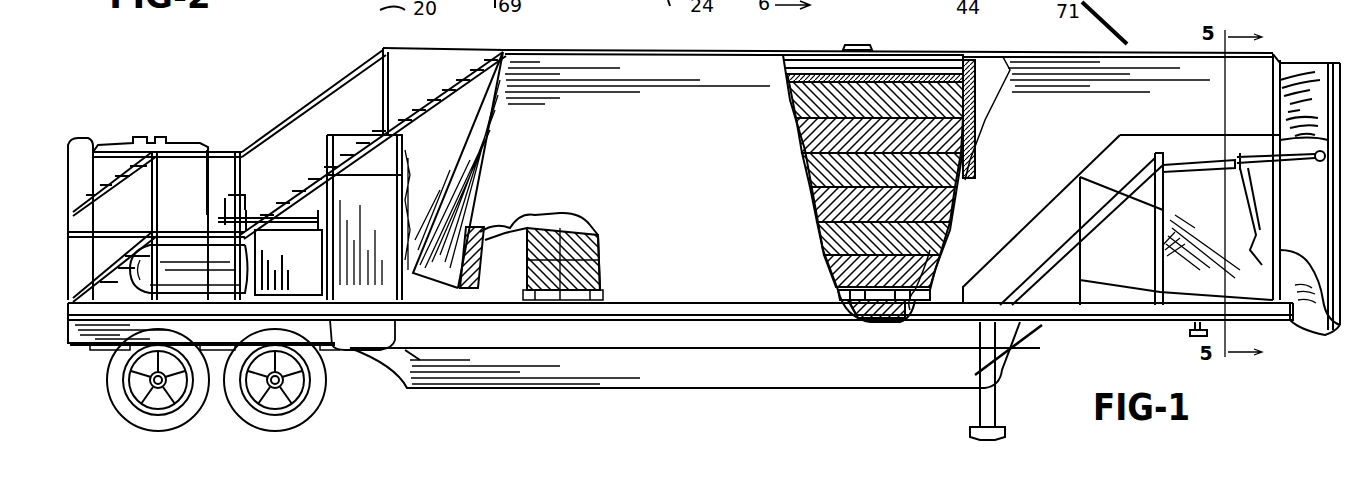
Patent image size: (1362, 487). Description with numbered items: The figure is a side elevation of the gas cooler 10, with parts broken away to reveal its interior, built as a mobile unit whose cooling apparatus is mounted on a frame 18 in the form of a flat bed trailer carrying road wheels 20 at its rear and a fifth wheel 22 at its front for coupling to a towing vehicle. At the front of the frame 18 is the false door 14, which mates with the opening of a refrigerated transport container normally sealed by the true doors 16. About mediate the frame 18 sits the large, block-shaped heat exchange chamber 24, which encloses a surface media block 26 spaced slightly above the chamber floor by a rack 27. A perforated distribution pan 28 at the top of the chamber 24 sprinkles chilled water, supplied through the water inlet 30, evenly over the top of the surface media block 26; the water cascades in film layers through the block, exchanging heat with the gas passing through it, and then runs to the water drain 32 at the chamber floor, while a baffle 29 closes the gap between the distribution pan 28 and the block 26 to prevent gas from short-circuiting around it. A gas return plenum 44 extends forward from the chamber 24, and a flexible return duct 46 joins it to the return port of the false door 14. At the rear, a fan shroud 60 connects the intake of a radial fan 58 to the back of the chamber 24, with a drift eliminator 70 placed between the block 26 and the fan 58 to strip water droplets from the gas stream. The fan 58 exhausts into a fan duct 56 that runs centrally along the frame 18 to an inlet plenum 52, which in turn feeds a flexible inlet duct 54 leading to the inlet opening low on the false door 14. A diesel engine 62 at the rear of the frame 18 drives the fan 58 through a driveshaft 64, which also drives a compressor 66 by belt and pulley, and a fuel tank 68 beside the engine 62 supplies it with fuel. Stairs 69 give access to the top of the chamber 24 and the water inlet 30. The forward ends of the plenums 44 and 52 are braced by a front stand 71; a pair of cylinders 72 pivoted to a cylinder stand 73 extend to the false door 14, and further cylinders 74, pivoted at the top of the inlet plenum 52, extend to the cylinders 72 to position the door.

The gas cooler 10 is at (800, 402).
The false door 14 is at (1330, 215).
The true doors 16 is at (1127, 18).
The frame 18 is at (85, 340).
The road wheels 20 is at (178, 412).
The fifth wheel 22 is at (1190, 335).
The heat exchange chamber 24 is at (662, 95).
The surface media block 26 is at (594, 258).
The rack 27 is at (935, 245).
The distribution pan 28 is at (816, 68).
The baffle 29 is at (963, 77).
The water inlet 30 is at (875, 46).
The water drain 32 is at (905, 315).
The gas return plenum 44 is at (1055, 75).
The flexible return duct 46 is at (1318, 72).
The inlet plenum 52 is at (1188, 232).
The flexible inlet duct 54 is at (1306, 325).
The fan duct 56 is at (388, 360).
The fan 58 is at (342, 137).
The fan shroud 60 is at (472, 178).
The engine 62 is at (182, 143).
The driveshaft 64 is at (268, 225).
The compressor 66 is at (215, 218).
The fuel tank 68 is at (195, 300).
The stairs 69 is at (390, 148).
The drift eliminator 70 is at (482, 270).
The front stand 71 is at (1275, 94).
The cylinders 72 is at (1212, 162).
The cylinder stand 73 is at (1155, 243).
The cylinders 74 is at (1240, 228).